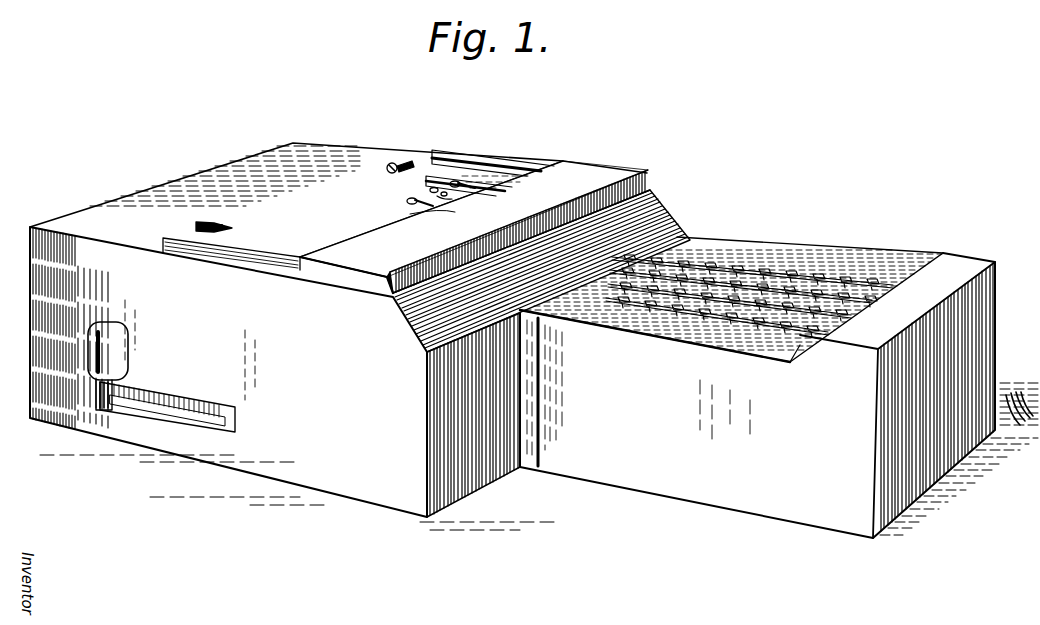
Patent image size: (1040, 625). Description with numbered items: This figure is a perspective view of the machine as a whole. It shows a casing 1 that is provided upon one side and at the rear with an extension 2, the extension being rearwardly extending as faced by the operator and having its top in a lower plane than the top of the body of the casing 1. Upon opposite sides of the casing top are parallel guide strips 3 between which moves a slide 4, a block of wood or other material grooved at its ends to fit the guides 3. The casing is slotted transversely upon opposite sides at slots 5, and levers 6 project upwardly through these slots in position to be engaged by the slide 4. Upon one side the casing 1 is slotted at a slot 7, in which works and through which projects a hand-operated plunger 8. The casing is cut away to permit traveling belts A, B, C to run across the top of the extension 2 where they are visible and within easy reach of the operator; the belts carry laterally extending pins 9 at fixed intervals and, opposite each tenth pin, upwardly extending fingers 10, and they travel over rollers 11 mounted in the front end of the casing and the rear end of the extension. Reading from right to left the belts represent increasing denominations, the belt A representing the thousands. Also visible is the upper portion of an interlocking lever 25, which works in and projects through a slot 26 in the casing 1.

The casing 1 is at (360, 336).
The extension 2 is at (780, 395).
The guide strips 3 is at (249, 256).
The slide 4 is at (520, 196).
The slots 5 is at (232, 214).
The levers 6 is at (198, 224).
The slot 7 is at (208, 406).
The hand-operated plunger 8 is at (115, 343).
The pins 9 is at (890, 282).
The fingers 10 is at (718, 262).
The rollers 11 is at (797, 340).
The interlocking lever 25 is at (493, 127).
The slot 26 is at (437, 199).
The traveling belt A is at (762, 264).
The traveling belt B is at (888, 303).
The traveling belt C is at (845, 323).